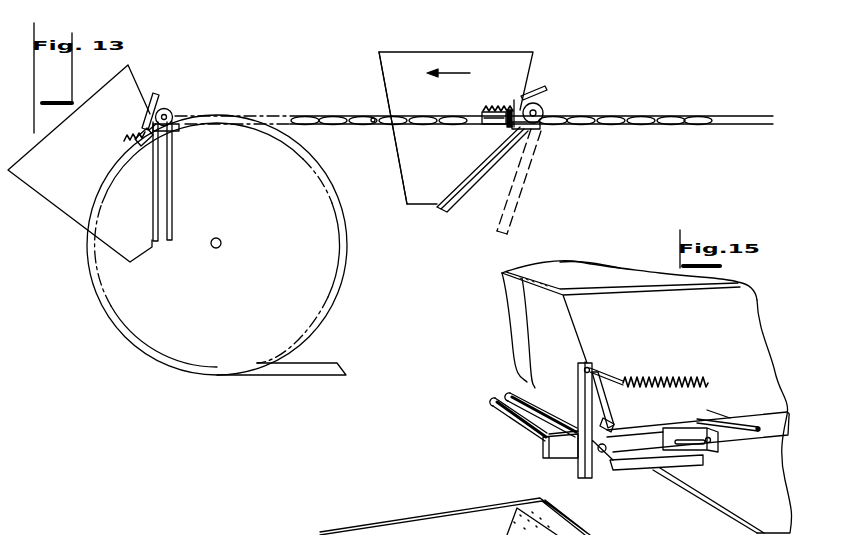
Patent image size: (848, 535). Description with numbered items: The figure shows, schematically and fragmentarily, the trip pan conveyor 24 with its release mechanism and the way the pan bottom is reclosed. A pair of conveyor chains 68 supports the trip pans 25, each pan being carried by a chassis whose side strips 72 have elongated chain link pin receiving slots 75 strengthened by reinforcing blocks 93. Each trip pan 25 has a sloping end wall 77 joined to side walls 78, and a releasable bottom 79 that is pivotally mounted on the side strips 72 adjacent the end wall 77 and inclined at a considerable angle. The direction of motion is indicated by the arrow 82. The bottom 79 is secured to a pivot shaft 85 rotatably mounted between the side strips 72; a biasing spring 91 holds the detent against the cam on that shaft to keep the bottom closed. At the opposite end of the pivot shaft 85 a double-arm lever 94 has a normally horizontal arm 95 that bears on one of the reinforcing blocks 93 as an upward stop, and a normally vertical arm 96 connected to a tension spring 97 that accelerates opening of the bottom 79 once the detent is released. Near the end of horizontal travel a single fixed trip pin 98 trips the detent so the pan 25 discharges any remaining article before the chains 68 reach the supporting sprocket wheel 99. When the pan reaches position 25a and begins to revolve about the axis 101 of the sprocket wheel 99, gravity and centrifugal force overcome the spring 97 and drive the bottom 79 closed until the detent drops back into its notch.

In FIG. 13, the trip pan conveyor 24 is at (80, 254).
In FIG. 13, the trip pan 25 is at (392, 69).
In FIG. 15, the trip pan 25 is at (560, 260).
In FIG. 13, the trip pan position 25a is at (142, 113).
In FIG. 13, the conveyor chains 68 is at (645, 115).
In FIG. 15, the side strips 72 is at (767, 438).
In FIG. 15, the chain link pin receiving slots 75 is at (708, 453).
In FIG. 15, the end wall 77 is at (527, 305).
In FIG. 15, the side walls 78 is at (380, 523).
In FIG. 13, the releasable bottom 79 is at (173, 187).
In FIG. 13, the arrow 82 is at (456, 64).
In FIG. 15, the pivot shaft 85 is at (512, 392).
In FIG. 13, the biasing spring 91 is at (140, 97).
In FIG. 15, the reinforcing blocks 93 is at (703, 425).
In FIG. 15, the double-arm lever 94 is at (600, 473).
In FIG. 15, the horizontal arm 95 is at (687, 466).
In FIG. 15, the vertical arm 96 is at (567, 378).
In FIG. 15, the tension spring 97 is at (677, 388).
In FIG. 13, the fixed trip pin 98 is at (528, 92).
In FIG. 13, the supporting sprocket wheel 99 is at (323, 257).
In FIG. 13, the axis of the sprocket wheel 101 is at (223, 241).